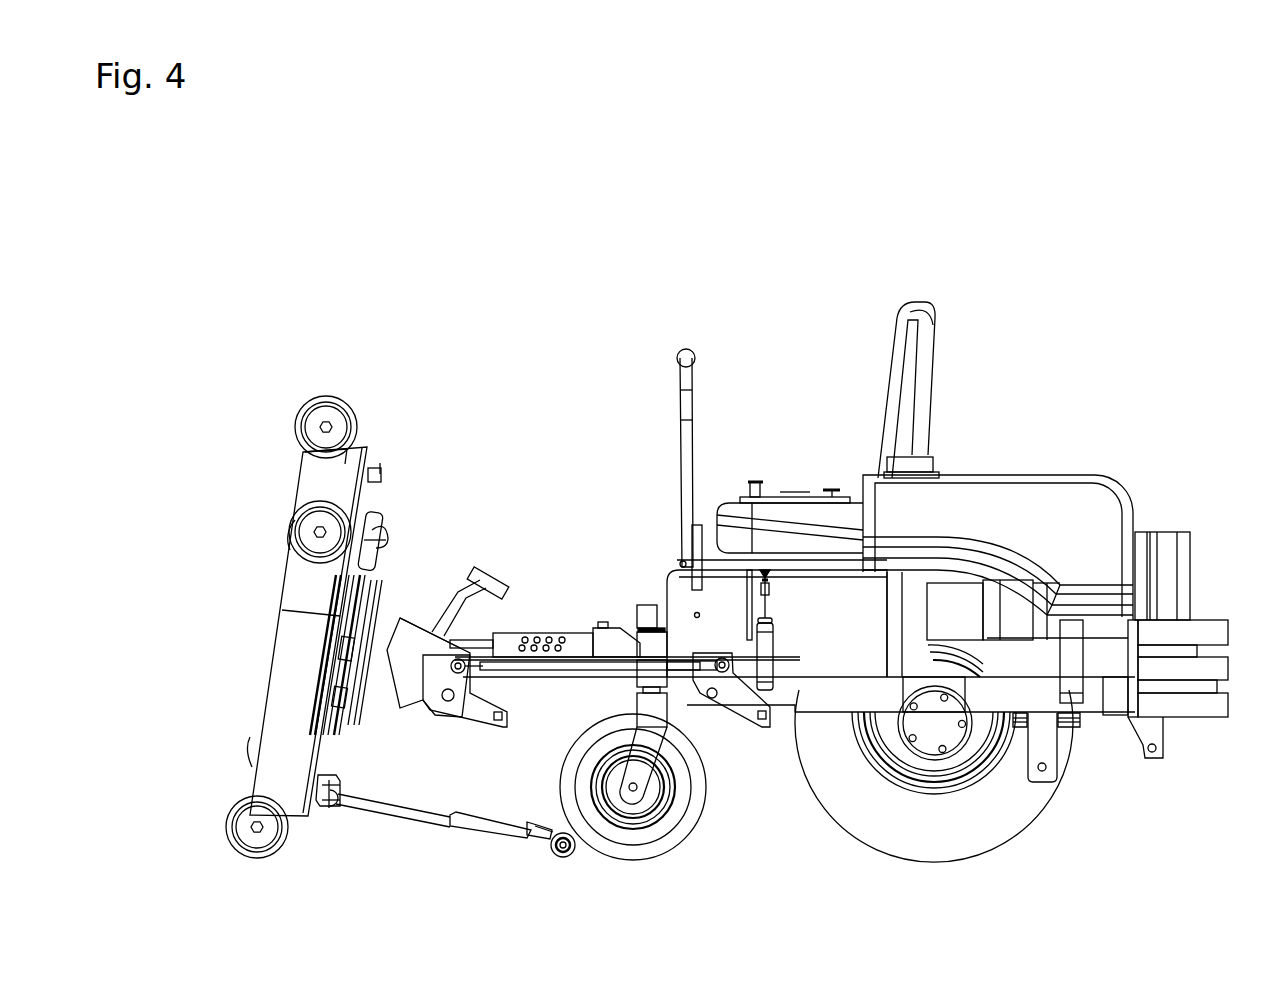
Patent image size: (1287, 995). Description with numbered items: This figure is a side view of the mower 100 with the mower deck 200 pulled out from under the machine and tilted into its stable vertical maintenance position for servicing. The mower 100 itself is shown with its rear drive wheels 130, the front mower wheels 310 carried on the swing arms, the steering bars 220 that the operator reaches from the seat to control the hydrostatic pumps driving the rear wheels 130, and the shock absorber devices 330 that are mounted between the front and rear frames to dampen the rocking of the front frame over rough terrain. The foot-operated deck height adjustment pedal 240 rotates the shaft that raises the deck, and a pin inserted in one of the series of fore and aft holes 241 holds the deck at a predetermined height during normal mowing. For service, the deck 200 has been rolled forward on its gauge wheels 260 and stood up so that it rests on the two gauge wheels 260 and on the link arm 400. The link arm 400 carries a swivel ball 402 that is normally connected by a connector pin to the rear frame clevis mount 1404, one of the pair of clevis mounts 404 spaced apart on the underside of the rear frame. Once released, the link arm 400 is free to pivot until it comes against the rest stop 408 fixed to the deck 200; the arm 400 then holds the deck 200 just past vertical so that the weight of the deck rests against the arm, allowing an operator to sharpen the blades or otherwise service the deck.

The mower 100 is at (792, 225).
The rear drive wheels 130 is at (890, 835).
The mower deck 200 is at (277, 660).
The steering bars 220 is at (680, 352).
The deck height adjustment pedal 240 is at (508, 565).
The fore and aft holes 241 is at (572, 640).
The gauge wheels 260 is at (300, 418).
The mower wheels 310 is at (645, 833).
The shock absorber devices 330 is at (765, 655).
The push arm 400 is at (400, 823).
The swivel ball 402 is at (563, 855).
The clevis mounts 404 is at (1155, 732).
The rest stop 408 is at (340, 770).
The rear frame clevis mount 1404 is at (1050, 750).